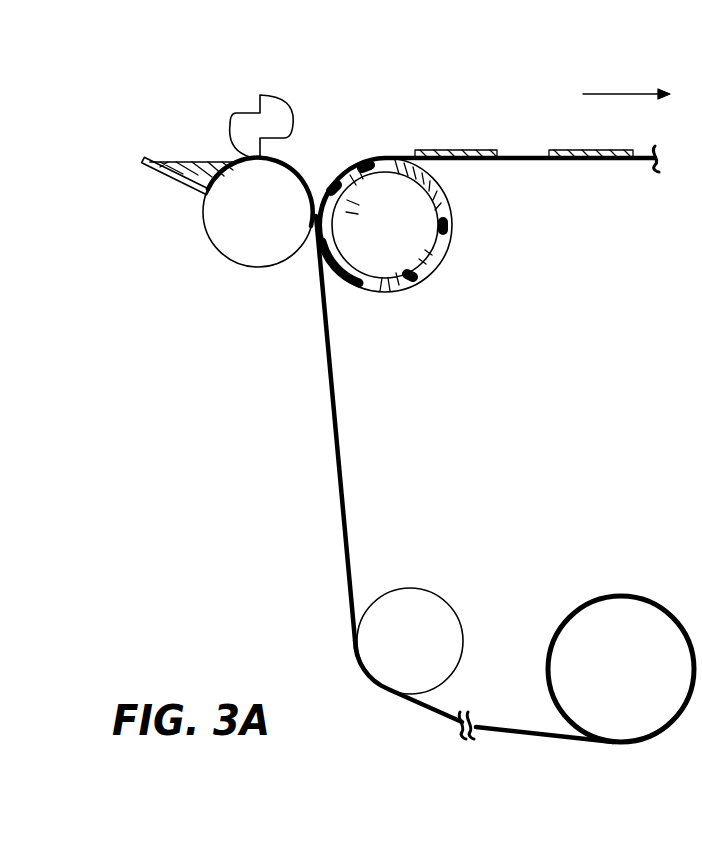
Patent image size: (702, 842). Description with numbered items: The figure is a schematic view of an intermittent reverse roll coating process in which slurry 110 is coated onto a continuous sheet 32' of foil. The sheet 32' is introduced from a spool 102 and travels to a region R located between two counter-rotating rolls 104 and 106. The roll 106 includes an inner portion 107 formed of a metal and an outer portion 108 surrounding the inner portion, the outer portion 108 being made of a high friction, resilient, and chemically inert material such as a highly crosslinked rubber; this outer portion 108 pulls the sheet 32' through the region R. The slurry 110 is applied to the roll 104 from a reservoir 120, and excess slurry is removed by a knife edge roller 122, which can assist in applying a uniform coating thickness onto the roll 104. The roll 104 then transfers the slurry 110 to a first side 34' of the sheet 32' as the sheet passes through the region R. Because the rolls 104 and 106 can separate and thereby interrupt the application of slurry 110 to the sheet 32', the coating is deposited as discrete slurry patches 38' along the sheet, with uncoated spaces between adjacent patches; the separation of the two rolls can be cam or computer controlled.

The spool 102 is at (590, 600).
The continuous sheet 32' is at (368, 644).
The first side 34' is at (296, 428).
The roll 104 is at (219, 266).
The roll 106 is at (440, 268).
The inner portion 107 is at (416, 218).
The outer portion 108 is at (385, 293).
The slurry 110 is at (187, 150).
The reservoir 120 is at (190, 183).
The knife edge roller 122 is at (282, 95).
The region R is at (320, 166).
The slurry patches 38' is at (492, 117).